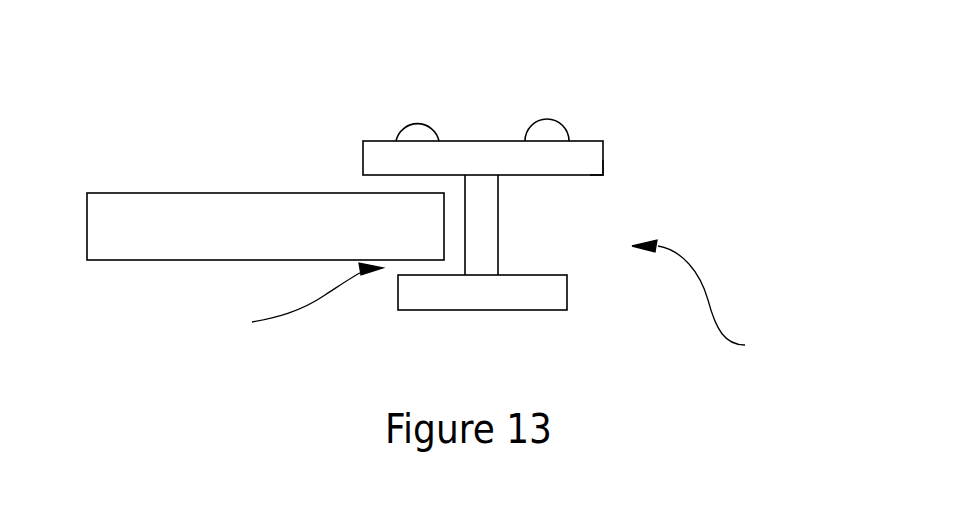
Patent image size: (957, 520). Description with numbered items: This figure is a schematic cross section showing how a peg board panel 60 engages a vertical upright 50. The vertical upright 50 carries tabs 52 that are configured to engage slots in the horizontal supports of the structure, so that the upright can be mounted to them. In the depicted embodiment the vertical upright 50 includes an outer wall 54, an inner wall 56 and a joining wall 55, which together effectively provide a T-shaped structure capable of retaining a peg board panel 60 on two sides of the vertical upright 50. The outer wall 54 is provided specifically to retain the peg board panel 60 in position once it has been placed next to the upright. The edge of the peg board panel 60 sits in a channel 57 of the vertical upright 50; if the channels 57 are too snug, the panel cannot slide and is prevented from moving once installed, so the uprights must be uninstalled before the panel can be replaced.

The vertical upright 50 is at (596, 128).
The tab 52 is at (417, 124).
The outer wall 54 is at (398, 292).
The joining wall 55 is at (498, 248).
The inner wall 56 is at (590, 175).
The channel 57 is at (499, 302).
The peg board panel 60 is at (162, 193).